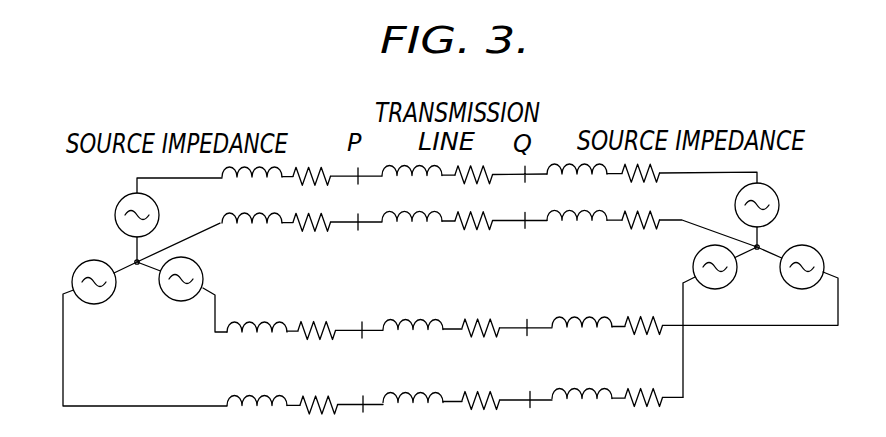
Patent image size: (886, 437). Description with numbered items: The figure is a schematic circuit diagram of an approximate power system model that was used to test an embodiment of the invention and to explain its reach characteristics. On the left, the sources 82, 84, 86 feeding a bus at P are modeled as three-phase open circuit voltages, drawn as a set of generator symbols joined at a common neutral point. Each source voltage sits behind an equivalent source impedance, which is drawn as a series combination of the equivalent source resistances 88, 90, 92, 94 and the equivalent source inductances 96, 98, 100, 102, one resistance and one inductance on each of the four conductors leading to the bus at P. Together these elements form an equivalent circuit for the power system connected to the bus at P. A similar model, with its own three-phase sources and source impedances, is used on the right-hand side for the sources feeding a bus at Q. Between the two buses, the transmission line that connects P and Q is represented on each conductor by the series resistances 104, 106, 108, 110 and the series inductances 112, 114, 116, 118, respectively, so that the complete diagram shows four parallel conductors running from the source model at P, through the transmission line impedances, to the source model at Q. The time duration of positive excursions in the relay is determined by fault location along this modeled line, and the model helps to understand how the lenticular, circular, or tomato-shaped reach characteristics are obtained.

The source 82 is at (115, 214).
The source 84 is at (77, 267).
The source 86 is at (164, 293).
The equivalent source resistance 88 is at (307, 168).
The equivalent source resistance 90 is at (310, 226).
The equivalent source resistance 92 is at (309, 324).
The equivalent source resistance 94 is at (321, 399).
The equivalent source inductance 96 is at (246, 178).
The equivalent source inductance 98 is at (250, 226).
The equivalent source inductance 100 is at (252, 330).
The equivalent source inductance 102 is at (253, 404).
The series resistance 104 is at (465, 177).
The series resistance 106 is at (468, 230).
The series resistance 108 is at (463, 325).
The series resistance 110 is at (481, 395).
The series inductance 112 is at (403, 176).
The series inductance 114 is at (403, 224).
The series inductance 116 is at (410, 324).
The series inductance 118 is at (426, 396).